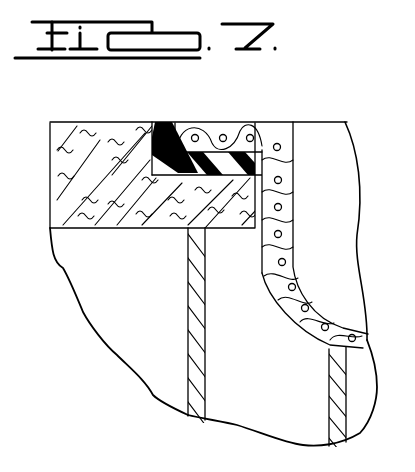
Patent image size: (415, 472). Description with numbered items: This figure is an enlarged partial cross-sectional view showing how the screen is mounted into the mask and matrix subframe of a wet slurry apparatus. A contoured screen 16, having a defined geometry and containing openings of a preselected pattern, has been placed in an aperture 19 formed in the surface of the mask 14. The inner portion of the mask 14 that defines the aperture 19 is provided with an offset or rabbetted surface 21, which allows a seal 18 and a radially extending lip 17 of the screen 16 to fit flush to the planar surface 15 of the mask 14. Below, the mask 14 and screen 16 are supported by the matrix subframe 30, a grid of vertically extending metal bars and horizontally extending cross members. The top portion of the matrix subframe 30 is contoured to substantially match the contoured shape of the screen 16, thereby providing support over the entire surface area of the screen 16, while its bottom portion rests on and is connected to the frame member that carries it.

The mask 14 is at (111, 203).
The planar surface 15 is at (71, 122).
The contoured screen 16 is at (287, 153).
The radially extending lip 17 is at (225, 136).
The seal 18 is at (184, 132).
The aperture 19 is at (170, 140).
The rabbetted surface 21 is at (229, 170).
The matrix subframe 30 is at (328, 378).